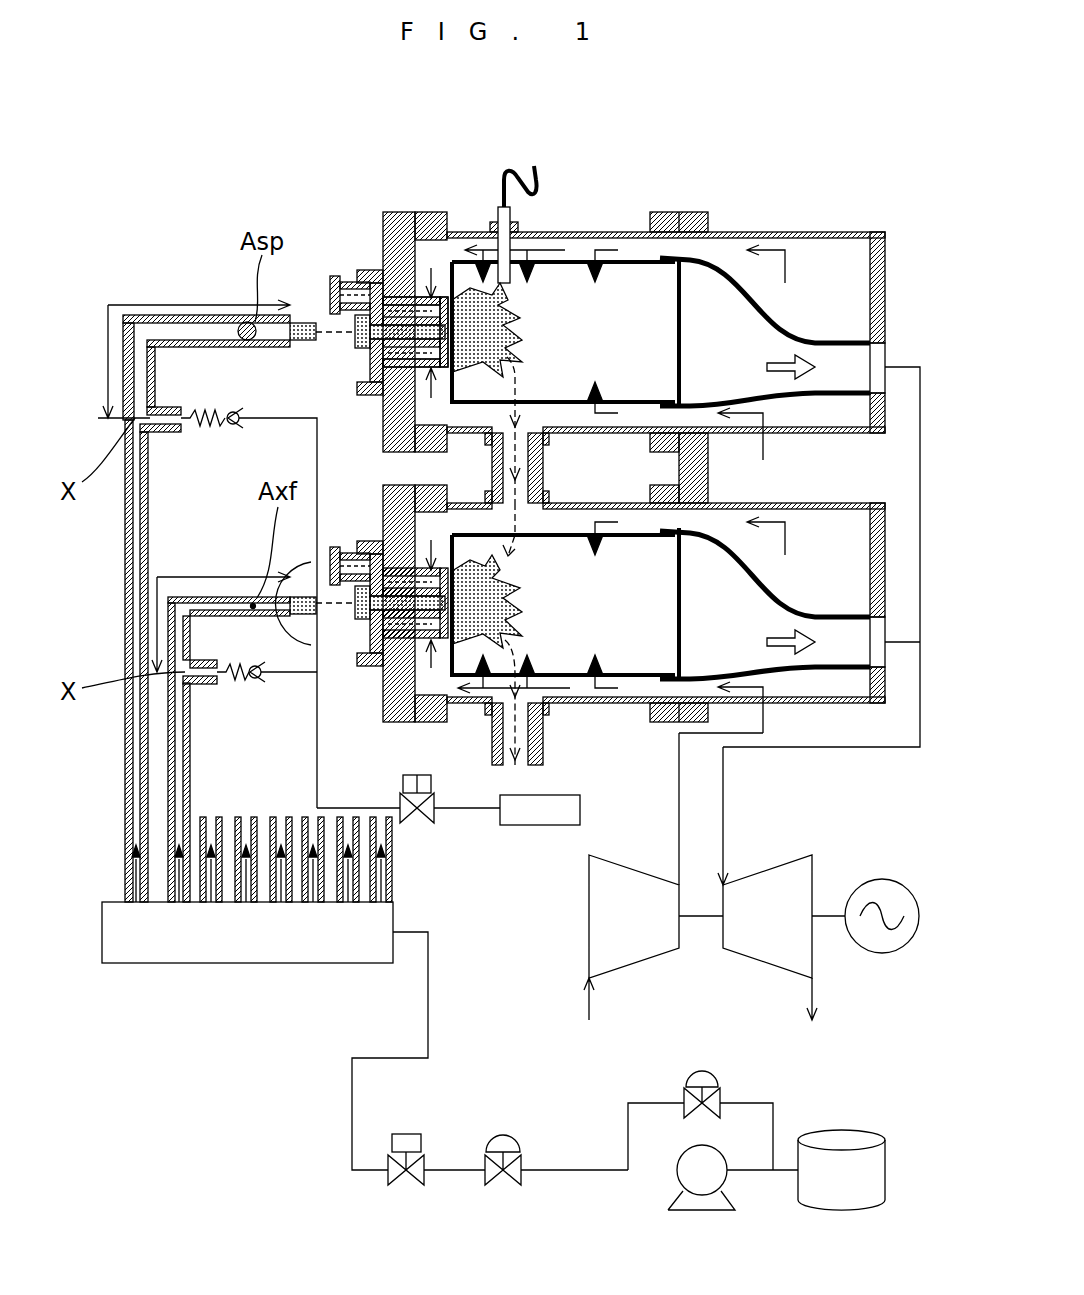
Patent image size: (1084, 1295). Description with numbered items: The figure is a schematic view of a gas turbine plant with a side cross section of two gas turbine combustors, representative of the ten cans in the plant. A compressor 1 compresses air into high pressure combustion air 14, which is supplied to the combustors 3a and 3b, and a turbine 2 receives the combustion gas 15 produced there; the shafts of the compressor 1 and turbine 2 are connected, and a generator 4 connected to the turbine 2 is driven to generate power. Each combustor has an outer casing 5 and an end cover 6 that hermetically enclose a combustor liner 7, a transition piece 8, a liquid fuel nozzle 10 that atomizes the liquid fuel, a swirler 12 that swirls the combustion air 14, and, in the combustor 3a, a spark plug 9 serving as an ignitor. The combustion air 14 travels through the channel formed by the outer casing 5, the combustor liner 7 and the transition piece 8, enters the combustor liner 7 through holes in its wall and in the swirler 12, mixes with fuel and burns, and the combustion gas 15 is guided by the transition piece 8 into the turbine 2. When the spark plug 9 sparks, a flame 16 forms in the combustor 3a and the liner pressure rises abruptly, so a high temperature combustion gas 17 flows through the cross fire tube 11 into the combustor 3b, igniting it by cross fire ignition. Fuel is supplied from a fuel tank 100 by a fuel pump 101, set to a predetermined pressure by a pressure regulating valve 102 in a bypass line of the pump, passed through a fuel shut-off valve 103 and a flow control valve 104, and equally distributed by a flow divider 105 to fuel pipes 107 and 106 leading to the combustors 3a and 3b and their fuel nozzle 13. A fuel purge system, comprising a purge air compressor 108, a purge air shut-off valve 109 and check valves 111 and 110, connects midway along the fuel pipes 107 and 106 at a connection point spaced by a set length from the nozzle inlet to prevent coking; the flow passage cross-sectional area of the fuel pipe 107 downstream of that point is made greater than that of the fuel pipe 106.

The compressor 1 is at (631, 876).
The turbine 2 is at (748, 883).
The combustor 3a is at (382, 352).
The combustor 3b is at (382, 623).
The generator 4 is at (880, 879).
The outer casing 5 is at (605, 232).
The end cover 6 is at (398, 212).
The combustor liner 7 is at (565, 331).
The transition piece 8 is at (765, 332).
The spark plug 9 is at (513, 215).
The liquid fuel nozzle 10 is at (424, 298).
The cross fire tube 11 is at (528, 455).
The swirler 12 is at (457, 298).
The fuel nozzle 13 is at (383, 445).
The combustion air 14 is at (768, 250).
The combustion gas 15 is at (788, 360).
The flame 16 is at (487, 465).
The high temperature combustion gas 17 is at (520, 378).
The fuel tank 100 is at (841, 1170).
The fuel pump 101 is at (733, 1177).
The pressure regulating valve 102 is at (720, 1100).
The fuel shut-off valve 103 is at (510, 1135).
The flow control valve 104 is at (415, 1134).
The flow divider 105 is at (265, 993).
The fuel pipe 106 is at (214, 598).
The fuel pipe 107 is at (184, 330).
The purge air compressor 108 is at (507, 810).
The purge air shut-off valve 109 is at (440, 830).
The check valve 110 is at (257, 686).
The check valve 111 is at (222, 412).